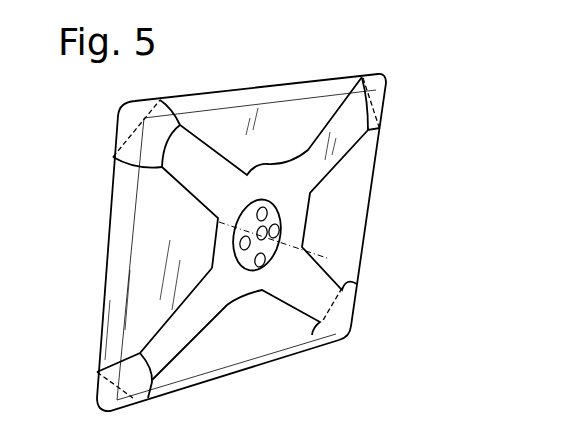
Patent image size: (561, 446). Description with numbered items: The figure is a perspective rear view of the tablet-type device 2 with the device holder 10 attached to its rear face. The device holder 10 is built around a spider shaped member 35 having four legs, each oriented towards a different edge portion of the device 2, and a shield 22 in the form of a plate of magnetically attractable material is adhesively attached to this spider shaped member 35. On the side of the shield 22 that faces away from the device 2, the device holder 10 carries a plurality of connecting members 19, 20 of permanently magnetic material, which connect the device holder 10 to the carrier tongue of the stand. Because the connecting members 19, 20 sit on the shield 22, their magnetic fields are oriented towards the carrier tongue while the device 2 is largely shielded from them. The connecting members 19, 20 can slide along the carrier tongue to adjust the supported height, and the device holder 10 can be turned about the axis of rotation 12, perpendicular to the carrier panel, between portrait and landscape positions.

The device 2 is at (383, 151).
The device holder 10 is at (208, 143).
The axis of rotation 12 is at (202, 221).
The connecting members 19 is at (273, 202).
The connecting member 20 is at (244, 270).
The shield 22 is at (277, 215).
The spider shaped member 35 is at (330, 157).